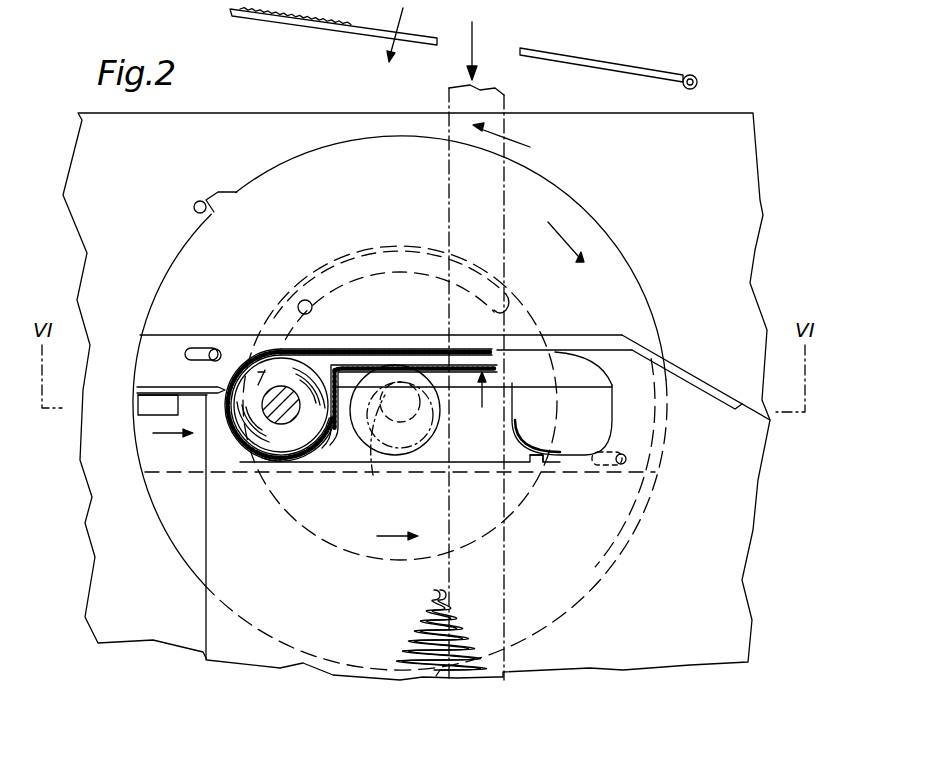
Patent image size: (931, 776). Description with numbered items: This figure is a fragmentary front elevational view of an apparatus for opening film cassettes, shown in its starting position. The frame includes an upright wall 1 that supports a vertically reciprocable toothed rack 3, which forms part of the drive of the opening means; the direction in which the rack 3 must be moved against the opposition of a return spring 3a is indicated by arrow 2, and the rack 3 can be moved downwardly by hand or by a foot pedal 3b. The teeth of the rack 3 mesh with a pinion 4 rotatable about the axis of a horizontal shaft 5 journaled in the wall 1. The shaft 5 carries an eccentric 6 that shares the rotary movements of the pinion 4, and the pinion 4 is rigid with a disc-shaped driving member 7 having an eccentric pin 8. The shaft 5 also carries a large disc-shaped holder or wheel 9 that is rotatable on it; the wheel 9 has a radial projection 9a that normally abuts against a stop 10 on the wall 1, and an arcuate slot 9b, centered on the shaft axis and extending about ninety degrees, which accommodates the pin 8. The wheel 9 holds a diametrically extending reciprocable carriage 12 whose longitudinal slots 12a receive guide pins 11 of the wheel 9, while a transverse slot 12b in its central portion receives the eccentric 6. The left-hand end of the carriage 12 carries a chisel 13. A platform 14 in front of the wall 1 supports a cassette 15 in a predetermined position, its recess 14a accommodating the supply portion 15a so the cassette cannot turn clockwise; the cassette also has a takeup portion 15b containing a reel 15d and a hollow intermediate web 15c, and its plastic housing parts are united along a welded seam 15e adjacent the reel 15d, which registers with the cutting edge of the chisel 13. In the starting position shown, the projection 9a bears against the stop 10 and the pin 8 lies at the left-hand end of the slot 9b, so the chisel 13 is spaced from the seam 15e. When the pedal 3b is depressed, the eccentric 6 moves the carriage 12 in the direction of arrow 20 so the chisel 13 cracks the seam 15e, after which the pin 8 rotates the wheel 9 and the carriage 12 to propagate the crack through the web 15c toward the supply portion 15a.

The upright wall 1 is at (740, 118).
The arrow 2 is at (476, 47).
The toothed rack 3 is at (506, 204).
The return spring 3a is at (433, 628).
The foot pedal 3b is at (318, 32).
The pinion 4 is at (415, 447).
The horizontal shaft 5 is at (438, 428).
The eccentric 6 is at (385, 420).
The disc-shaped driving member 7 is at (380, 250).
The eccentric pin 8 is at (302, 300).
The disc-shaped holder or wheel 9 is at (623, 255).
The radial projection 9a is at (217, 192).
The arcuate slot 9b is at (432, 258).
The stop 10 is at (193, 207).
The guide pins 11 is at (216, 348).
The slide or carriage 12 is at (590, 336).
The longitudinally extending slots 12a is at (200, 347).
The transversely extending slot 12b is at (447, 440).
The chisel 13 is at (205, 387).
The support or platform 14 is at (538, 463).
The recess 14a is at (640, 367).
The film cassette 15 is at (467, 400).
The supply portion 15a is at (590, 417).
The takeup portion 15b is at (268, 458).
The hollow intermediate part or web 15c is at (473, 357).
The reel 15d is at (293, 423).
The welded seam 15e is at (226, 390).
The arrow 20 is at (400, 403).